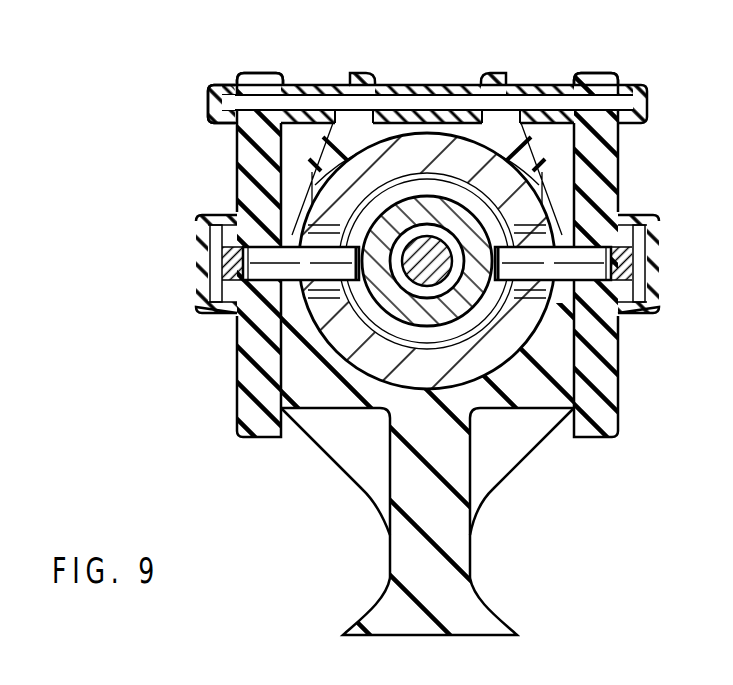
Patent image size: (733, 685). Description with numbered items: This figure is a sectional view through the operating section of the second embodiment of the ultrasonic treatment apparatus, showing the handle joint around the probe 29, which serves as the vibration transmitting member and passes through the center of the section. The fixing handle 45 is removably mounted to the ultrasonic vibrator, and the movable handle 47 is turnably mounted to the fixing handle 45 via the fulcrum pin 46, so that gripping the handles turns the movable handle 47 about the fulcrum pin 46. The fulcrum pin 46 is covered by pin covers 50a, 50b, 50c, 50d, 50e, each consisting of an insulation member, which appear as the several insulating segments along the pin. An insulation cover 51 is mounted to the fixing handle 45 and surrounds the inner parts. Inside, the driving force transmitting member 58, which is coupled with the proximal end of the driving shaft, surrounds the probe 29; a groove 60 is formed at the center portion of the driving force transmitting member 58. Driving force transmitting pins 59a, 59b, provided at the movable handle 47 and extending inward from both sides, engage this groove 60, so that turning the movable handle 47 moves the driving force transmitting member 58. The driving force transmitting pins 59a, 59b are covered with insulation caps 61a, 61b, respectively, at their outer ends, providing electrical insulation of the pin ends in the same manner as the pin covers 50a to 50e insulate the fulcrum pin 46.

The probe 29 is at (443, 248).
The fixing handle 45 is at (405, 555).
The fulcrum pin 46 is at (603, 108).
The movable handle 47 is at (247, 370).
The pin cover 50a is at (213, 87).
The pin cover 50b is at (317, 85).
The pin cover 50c is at (438, 85).
The pin cover 50d is at (547, 85).
The pin cover 50e is at (633, 85).
The insulation cover 51 is at (462, 377).
The driving force transmitting member 58 is at (463, 310).
The driving force transmitting pin 59a is at (263, 257).
The driving force transmitting pin 59b is at (590, 272).
The groove 60 is at (380, 323).
The insulation cap 61a is at (200, 262).
The insulation cap 61b is at (658, 262).